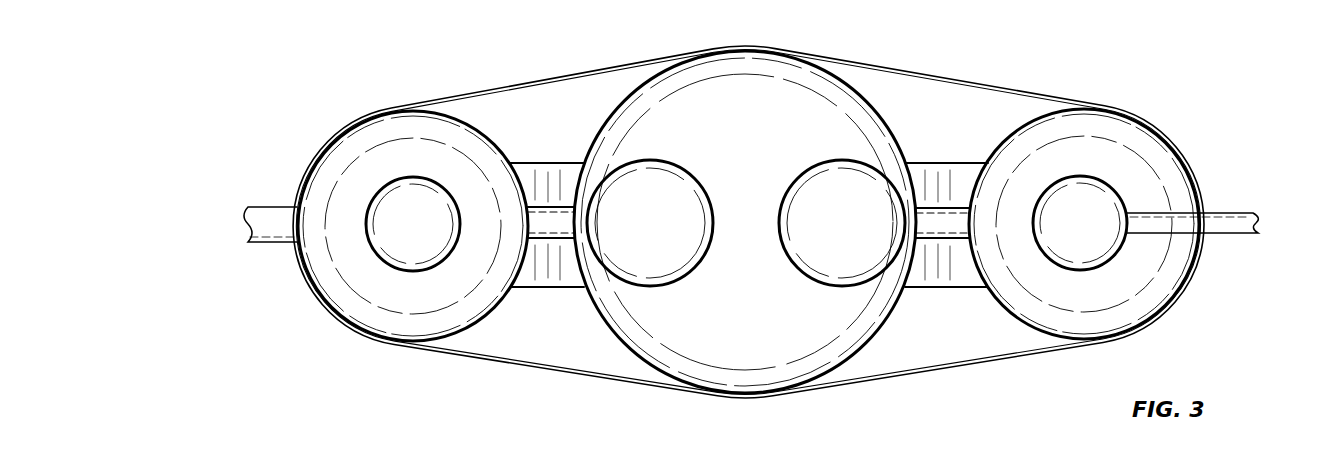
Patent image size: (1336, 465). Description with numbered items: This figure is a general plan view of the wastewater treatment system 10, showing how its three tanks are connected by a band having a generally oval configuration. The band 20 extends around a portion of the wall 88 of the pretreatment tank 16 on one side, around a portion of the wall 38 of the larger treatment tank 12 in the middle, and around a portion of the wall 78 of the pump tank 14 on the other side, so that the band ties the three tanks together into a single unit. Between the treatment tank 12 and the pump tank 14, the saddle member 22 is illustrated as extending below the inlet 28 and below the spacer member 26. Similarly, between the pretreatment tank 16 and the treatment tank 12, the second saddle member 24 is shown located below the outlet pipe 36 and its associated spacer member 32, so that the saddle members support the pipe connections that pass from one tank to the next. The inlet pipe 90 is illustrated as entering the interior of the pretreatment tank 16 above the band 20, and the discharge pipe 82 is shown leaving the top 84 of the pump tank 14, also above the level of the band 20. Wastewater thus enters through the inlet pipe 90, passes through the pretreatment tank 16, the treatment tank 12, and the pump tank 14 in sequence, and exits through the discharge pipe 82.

The wastewater treatment system 10 is at (1108, 80).
The treatment tank 12 is at (865, 303).
The pump tank 14 is at (1128, 305).
The pretreatment tank 16 is at (483, 300).
The band 20 is at (553, 76).
The saddle member 22 is at (927, 278).
The second saddle member 24 is at (530, 280).
The spacer member 26 is at (945, 205).
The inlet 28 is at (957, 227).
The spacer member 32 is at (556, 205).
The outlet pipe 36 is at (542, 215).
The wall 38 is at (885, 125).
The wall 78 is at (990, 150).
The discharge pipe 82 is at (1230, 210).
The top 84 is at (1105, 193).
The wall 88 is at (480, 130).
The inlet pipe 90 is at (272, 205).